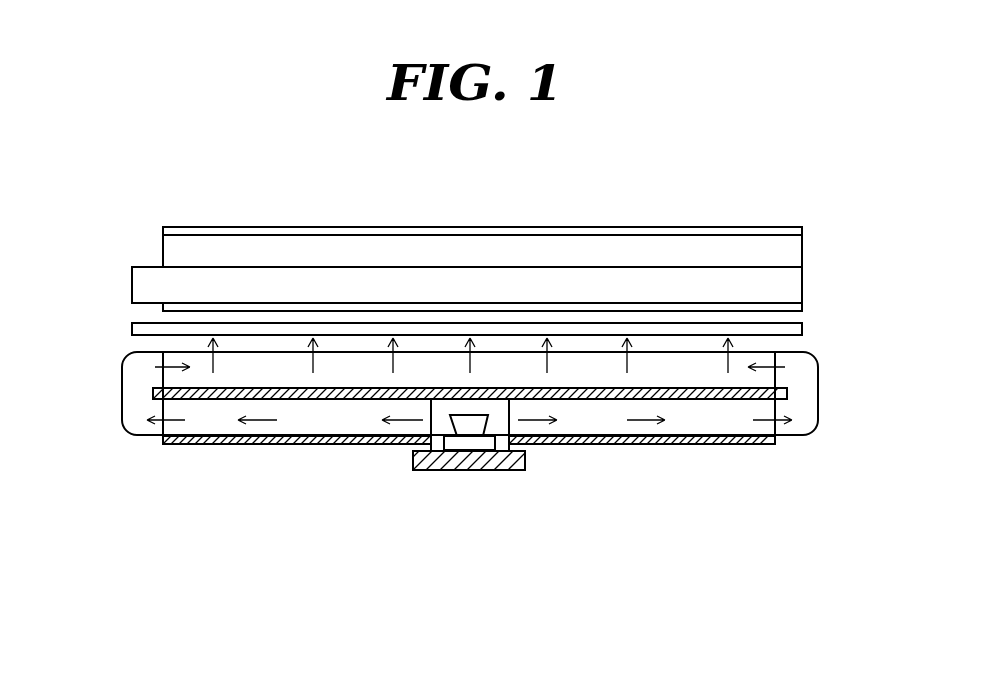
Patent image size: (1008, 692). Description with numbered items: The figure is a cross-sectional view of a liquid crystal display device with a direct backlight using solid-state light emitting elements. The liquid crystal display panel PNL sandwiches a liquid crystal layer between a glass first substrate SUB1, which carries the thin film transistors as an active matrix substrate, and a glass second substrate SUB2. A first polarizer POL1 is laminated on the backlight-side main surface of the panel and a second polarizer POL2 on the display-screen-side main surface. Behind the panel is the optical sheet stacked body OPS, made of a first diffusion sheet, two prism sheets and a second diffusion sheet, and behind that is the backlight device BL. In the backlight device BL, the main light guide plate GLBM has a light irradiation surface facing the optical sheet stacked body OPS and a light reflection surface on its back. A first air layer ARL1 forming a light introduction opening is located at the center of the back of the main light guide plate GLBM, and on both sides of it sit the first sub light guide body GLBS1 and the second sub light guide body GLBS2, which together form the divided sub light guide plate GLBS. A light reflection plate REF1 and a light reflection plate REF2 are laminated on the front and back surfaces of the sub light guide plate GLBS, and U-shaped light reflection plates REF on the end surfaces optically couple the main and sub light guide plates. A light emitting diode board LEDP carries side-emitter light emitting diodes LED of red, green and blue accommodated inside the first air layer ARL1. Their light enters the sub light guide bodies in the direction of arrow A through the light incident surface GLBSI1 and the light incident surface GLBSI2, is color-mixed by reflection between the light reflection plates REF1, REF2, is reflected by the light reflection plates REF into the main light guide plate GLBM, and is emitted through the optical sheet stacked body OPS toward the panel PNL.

The liquid crystal display panel PNL is at (490, 231).
The second polarizer POL2 is at (802, 233).
The first polarizer POL1 is at (802, 308).
The second substrate SUB2 is at (290, 250).
The first substrate SUB1 is at (143, 265).
The optical sheet stacked body OPS is at (802, 332).
The backlight device BL is at (462, 455).
The light reflection plate REF is at (462, 426).
The light reflection plate REF1 is at (725, 398).
The light reflection plate REF2 is at (633, 443).
The sub light guide plate GLBS is at (444, 438).
The main light guide plate GLBM is at (280, 373).
The first sub light guide body GLBS1 is at (207, 418).
The second sub light guide body GLBS2 is at (685, 420).
The light incident surface GLBSI1 is at (427, 425).
The light incident surface GLBSI2 is at (505, 425).
The arrow A is at (397, 420).
The light emitting diode LED is at (473, 427).
The light emitting diode board LEDP is at (461, 450).
The first air layer ARL1 is at (437, 451).